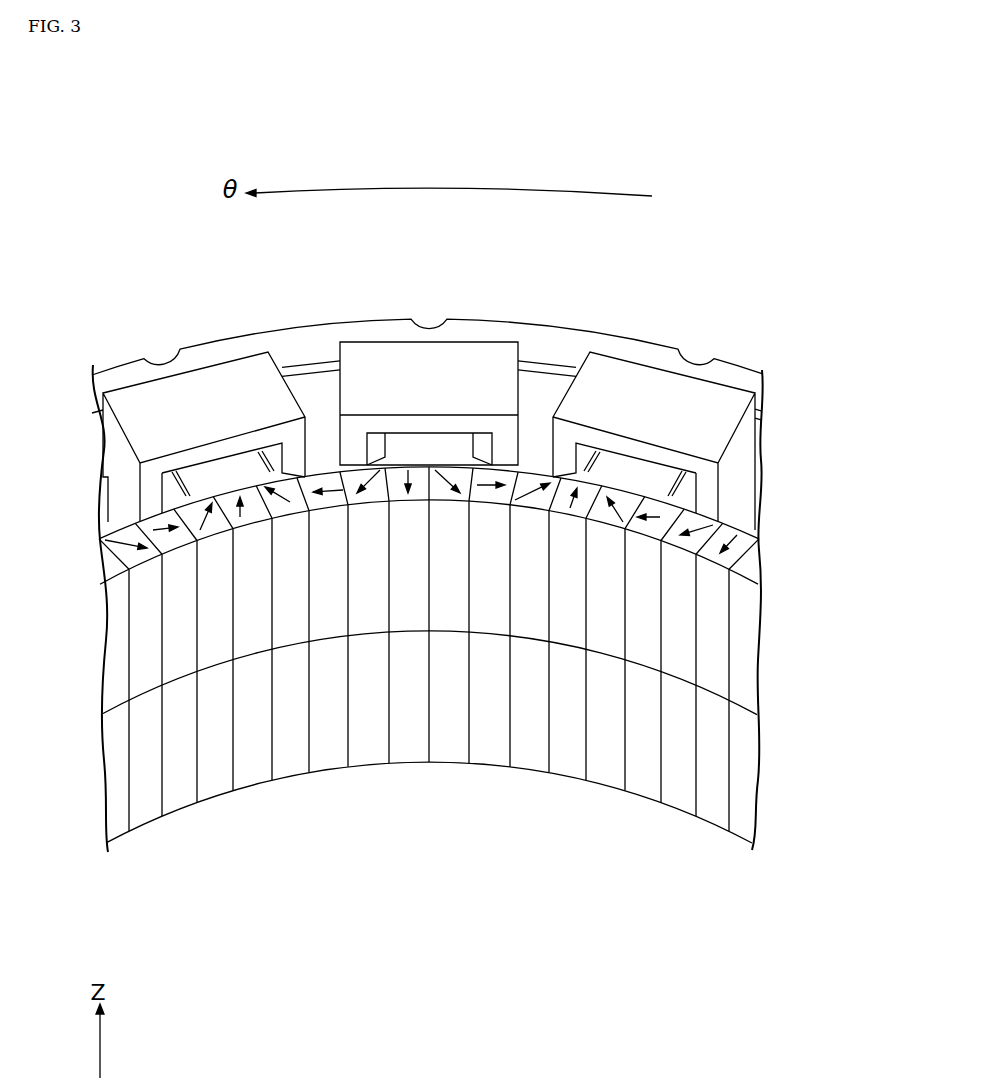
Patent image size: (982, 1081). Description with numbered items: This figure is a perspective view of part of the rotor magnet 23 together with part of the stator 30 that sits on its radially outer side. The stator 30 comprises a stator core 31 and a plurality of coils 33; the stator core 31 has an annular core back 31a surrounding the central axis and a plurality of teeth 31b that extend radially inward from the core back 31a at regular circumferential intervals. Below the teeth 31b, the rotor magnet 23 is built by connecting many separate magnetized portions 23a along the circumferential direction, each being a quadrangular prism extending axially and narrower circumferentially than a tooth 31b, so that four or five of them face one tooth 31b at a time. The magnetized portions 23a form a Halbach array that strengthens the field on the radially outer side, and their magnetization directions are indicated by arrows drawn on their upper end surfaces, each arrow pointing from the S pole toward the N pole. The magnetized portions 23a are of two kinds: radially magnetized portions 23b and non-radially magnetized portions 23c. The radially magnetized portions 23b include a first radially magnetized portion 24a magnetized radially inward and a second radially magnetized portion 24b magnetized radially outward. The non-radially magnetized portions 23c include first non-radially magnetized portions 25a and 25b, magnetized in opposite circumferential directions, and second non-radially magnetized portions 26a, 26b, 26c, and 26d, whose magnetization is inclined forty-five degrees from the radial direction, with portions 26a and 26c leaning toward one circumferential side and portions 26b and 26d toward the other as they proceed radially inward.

The stator 30 is at (669, 252).
The stator core 31 is at (318, 322).
The core back 31a is at (376, 333).
The teeth 31b is at (242, 467).
The coils 33 is at (176, 395).
The rotor magnet 23 is at (773, 572).
The magnetized portions 23a is at (723, 306).
The radially magnetized portion 23b is at (583, 471).
The non-radially magnetized portion 23c is at (621, 477).
The first radially magnetized portion 24a is at (417, 760).
The second radially magnetized portion 24b is at (252, 775).
The first non-radially magnetized portion 25a is at (328, 718).
The first non-radially magnetized portion 25b is at (178, 758).
The second non-radially magnetized portion 26a is at (370, 753).
The second non-radially magnetized portion 26b is at (292, 768).
The second non-radially magnetized portion 26c is at (215, 783).
The second non-radially magnetized portion 26d is at (145, 812).